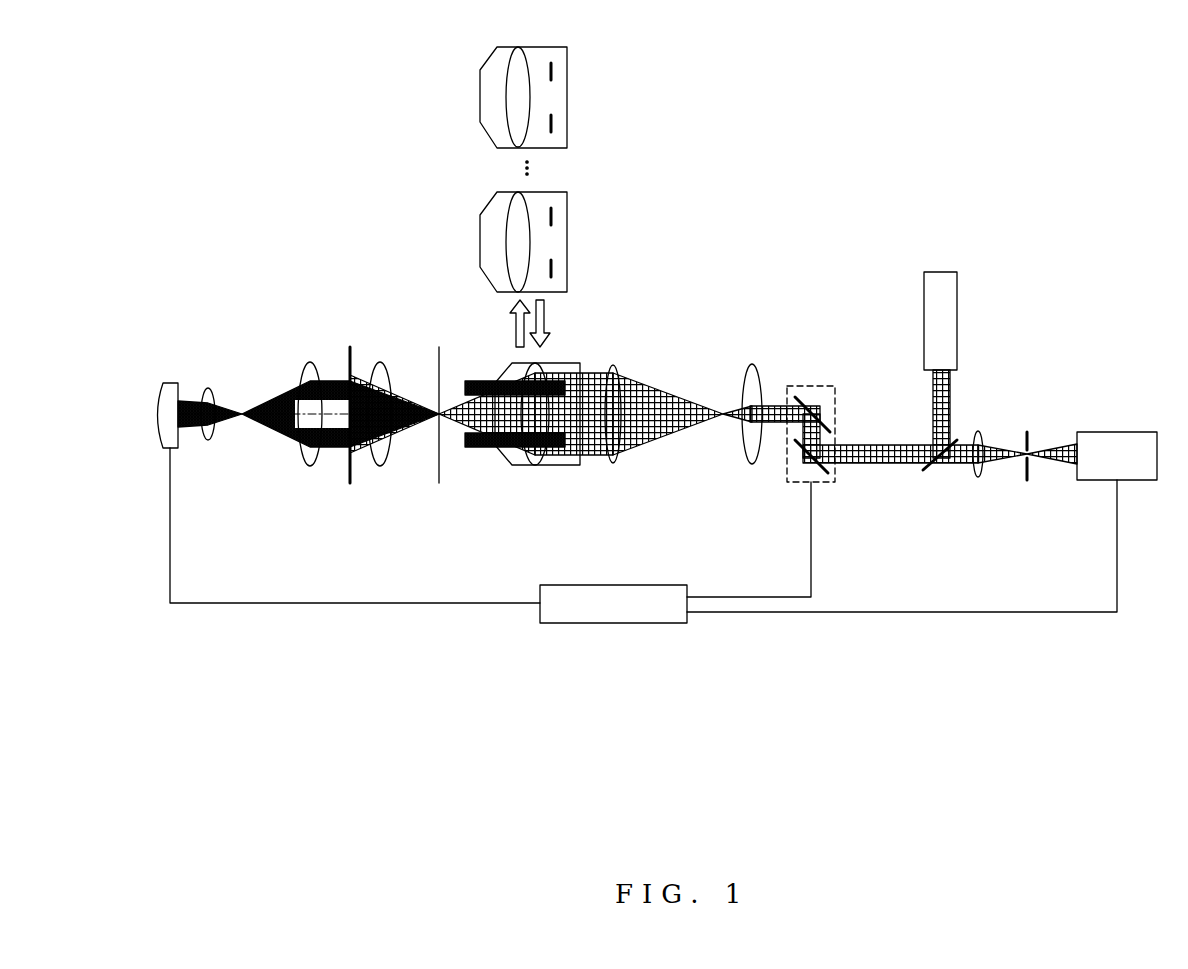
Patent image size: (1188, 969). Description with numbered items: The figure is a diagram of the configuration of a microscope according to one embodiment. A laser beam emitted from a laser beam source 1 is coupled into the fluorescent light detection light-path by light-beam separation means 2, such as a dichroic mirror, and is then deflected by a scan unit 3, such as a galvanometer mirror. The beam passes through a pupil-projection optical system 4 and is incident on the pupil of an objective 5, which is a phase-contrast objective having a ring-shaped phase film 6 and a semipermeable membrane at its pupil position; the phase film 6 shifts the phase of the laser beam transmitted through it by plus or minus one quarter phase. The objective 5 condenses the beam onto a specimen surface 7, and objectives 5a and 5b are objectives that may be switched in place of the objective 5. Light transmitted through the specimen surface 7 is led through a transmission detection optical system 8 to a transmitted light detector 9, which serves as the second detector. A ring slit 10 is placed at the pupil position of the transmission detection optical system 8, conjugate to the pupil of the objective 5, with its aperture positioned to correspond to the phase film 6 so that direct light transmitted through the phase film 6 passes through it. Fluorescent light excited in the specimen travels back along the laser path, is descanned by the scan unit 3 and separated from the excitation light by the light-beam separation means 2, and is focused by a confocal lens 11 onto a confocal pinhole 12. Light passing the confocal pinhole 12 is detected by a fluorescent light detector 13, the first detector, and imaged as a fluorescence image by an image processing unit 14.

The laser beam source 1 is at (958, 321).
The light-beam separation means 2 is at (931, 474).
The scan unit 3 is at (821, 386).
The pupil-projection optical system 4 is at (770, 355).
The objective 5 is at (557, 467).
The objective 5a is at (482, 237).
The objective 5b is at (482, 92).
The ring-shaped phase film 6 is at (575, 368).
The specimen surface 7 is at (443, 457).
The transmission detection optical system 8 is at (418, 340).
The transmitted light detector 9 is at (168, 383).
The ring slit 10 is at (346, 467).
The confocal lens 11 is at (984, 477).
The confocal pinhole 12 is at (1032, 433).
The fluorescent light detector 13 is at (1118, 432).
The image processing unit 14 is at (654, 585).